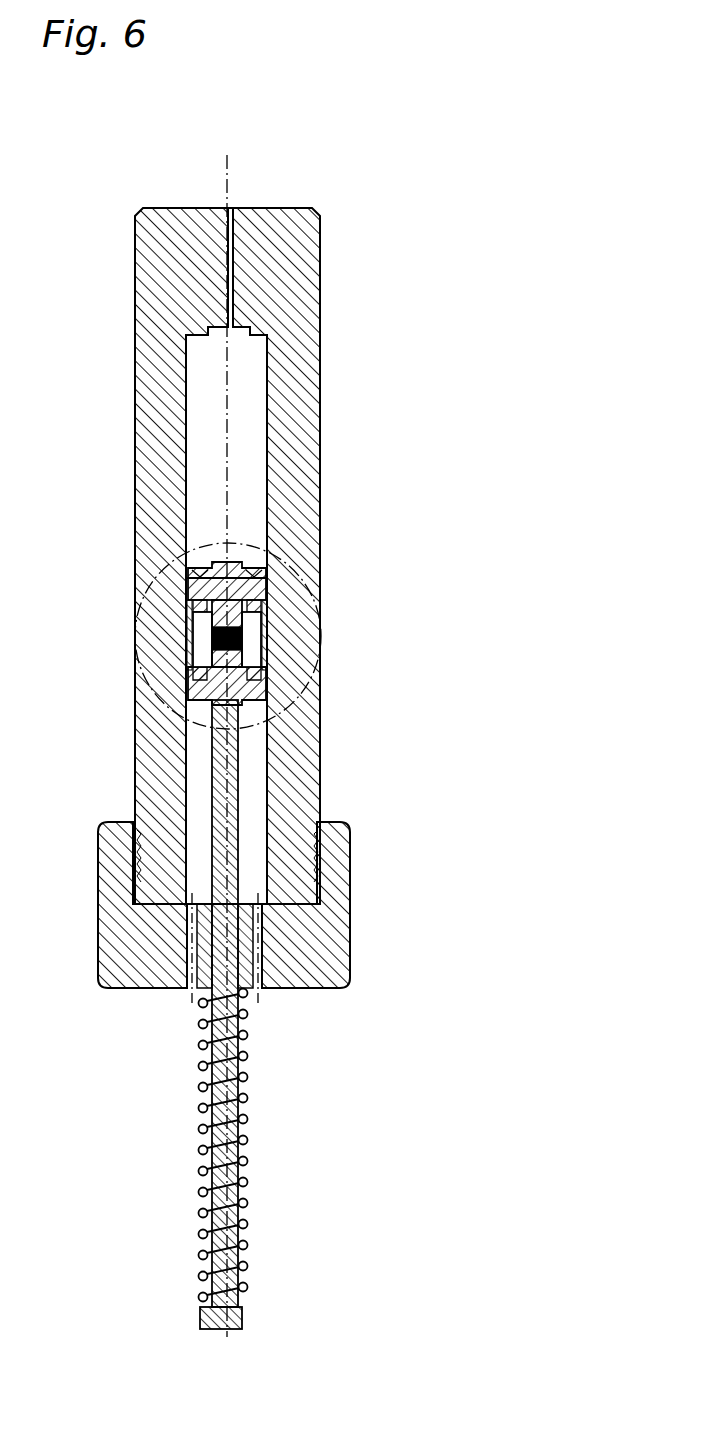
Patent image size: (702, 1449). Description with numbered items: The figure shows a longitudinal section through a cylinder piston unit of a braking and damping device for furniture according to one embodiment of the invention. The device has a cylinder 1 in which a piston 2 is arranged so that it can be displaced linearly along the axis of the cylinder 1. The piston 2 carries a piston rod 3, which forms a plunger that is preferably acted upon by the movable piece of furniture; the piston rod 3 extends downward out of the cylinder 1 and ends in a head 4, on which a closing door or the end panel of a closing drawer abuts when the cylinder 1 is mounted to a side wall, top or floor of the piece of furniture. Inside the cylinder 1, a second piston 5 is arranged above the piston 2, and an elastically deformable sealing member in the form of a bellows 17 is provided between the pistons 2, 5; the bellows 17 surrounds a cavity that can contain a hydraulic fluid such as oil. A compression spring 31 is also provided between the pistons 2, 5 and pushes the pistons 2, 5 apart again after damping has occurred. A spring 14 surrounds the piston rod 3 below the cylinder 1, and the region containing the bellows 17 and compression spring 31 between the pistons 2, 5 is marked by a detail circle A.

The cylinder 1 is at (285, 301).
The piston 2 is at (267, 692).
The piston rod 3 is at (235, 1157).
The head 4 is at (233, 1313).
The piston 5 is at (267, 583).
The spring 14 is at (245, 1055).
The bellows 17 is at (267, 632).
The compression spring 31 is at (215, 633).
The detail region A is at (161, 701).